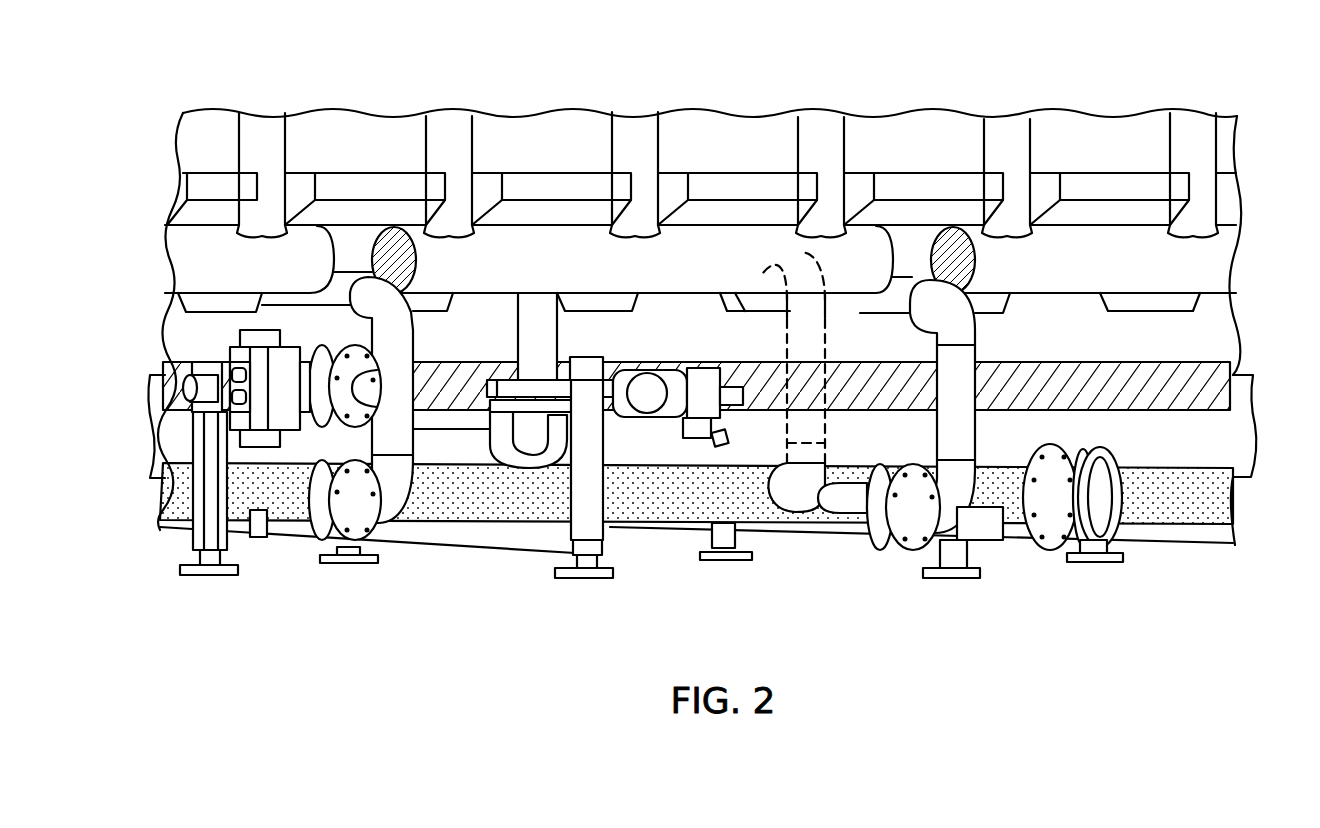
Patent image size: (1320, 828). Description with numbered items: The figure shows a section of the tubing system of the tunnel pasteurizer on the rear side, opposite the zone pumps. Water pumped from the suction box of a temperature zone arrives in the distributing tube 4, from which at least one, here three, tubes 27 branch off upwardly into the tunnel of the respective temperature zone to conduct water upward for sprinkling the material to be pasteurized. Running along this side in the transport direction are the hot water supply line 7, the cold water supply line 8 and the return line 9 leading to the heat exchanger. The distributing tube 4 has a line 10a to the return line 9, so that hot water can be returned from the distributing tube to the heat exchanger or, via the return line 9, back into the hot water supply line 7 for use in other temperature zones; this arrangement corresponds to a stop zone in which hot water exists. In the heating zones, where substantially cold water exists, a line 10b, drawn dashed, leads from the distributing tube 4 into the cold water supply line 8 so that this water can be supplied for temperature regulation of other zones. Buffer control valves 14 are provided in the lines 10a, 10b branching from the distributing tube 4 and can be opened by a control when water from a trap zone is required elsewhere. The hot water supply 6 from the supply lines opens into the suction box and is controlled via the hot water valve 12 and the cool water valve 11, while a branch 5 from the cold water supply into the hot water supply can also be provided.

The distributing tube 4 is at (553, 245).
The branch 5 is at (405, 428).
The hot water supply 6 is at (340, 272).
The hot water supply line 7 is at (836, 395).
The cold water supply line 8 is at (632, 514).
The return line 9 is at (150, 418).
The line to the return line 10a is at (520, 335).
The line to the cold water line 10b is at (796, 540).
The cool water valve 11 is at (355, 545).
The hot water valve 12 is at (290, 405).
The buffer control valve 14 is at (580, 583).
The tube 27 is at (272, 135).